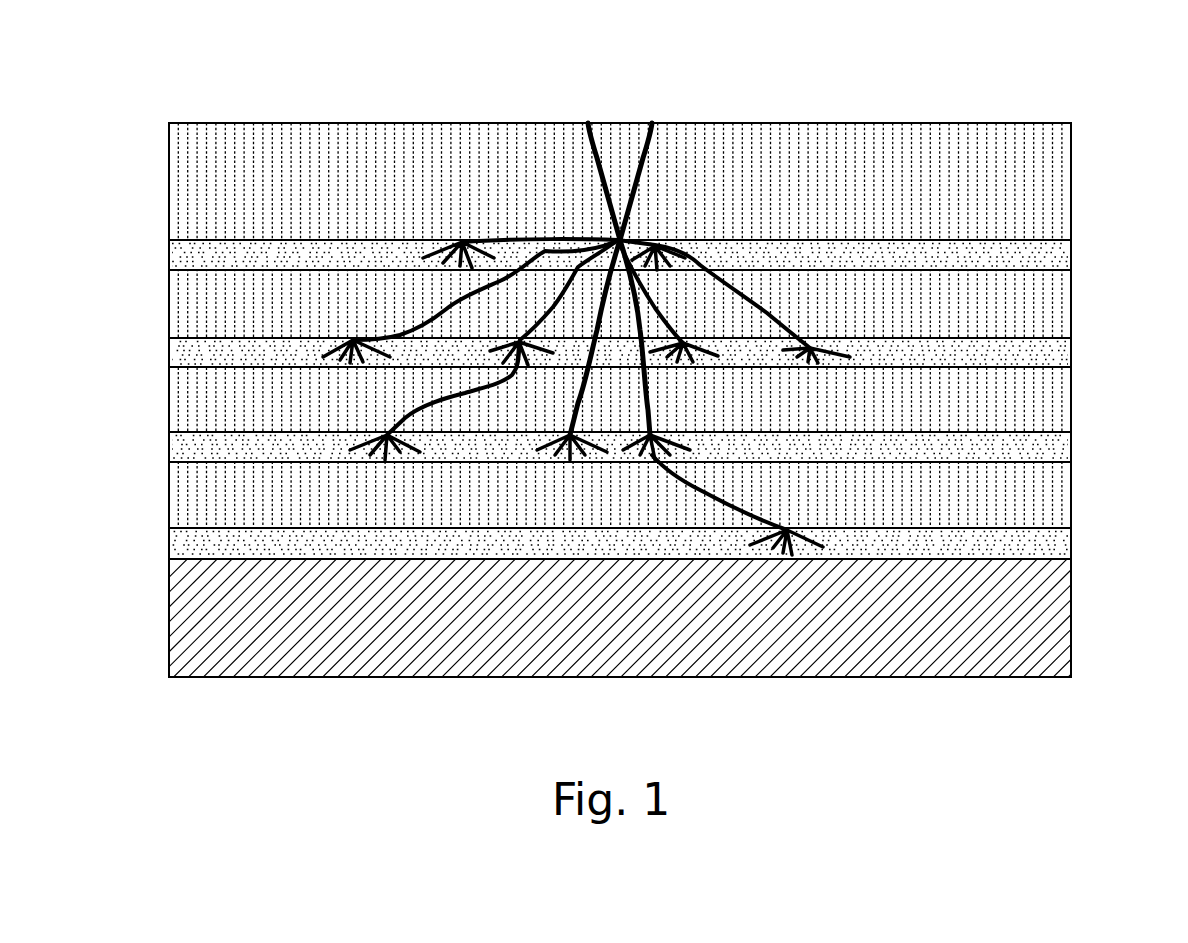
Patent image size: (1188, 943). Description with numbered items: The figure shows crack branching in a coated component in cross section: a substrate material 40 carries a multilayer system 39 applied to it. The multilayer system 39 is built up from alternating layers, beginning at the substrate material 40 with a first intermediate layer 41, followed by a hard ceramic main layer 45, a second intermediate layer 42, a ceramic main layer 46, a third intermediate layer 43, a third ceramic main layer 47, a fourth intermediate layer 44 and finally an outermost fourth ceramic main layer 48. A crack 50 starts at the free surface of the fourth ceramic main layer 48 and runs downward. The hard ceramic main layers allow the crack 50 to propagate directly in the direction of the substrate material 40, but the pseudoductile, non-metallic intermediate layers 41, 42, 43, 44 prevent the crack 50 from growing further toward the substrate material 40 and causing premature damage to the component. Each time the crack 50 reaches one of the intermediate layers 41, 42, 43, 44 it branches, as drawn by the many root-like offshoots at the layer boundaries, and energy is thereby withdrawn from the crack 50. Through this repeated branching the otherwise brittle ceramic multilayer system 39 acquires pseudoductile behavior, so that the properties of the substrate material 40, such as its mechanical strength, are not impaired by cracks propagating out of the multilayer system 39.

The multilayer system 39 is at (613, 361).
The substrate material 40 is at (1071, 600).
The first intermediate layer 41 is at (1071, 548).
The second intermediate layer 42 is at (1071, 453).
The third intermediate layer 43 is at (1071, 353).
The fourth intermediate layer 44 is at (1071, 258).
The hard ceramic main layer 45 is at (1071, 495).
The ceramic main layer 46 is at (1071, 400).
The third ceramic main layer 47 is at (1071, 297).
The fourth ceramic main layer 48 is at (1071, 205).
The crack 50 is at (625, 137).